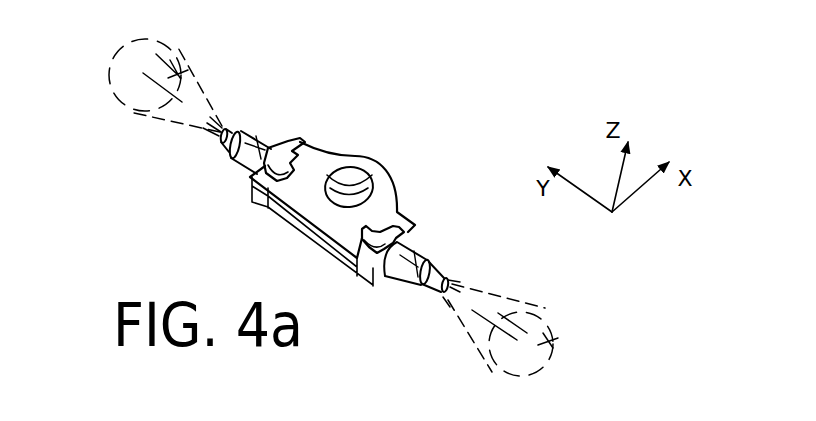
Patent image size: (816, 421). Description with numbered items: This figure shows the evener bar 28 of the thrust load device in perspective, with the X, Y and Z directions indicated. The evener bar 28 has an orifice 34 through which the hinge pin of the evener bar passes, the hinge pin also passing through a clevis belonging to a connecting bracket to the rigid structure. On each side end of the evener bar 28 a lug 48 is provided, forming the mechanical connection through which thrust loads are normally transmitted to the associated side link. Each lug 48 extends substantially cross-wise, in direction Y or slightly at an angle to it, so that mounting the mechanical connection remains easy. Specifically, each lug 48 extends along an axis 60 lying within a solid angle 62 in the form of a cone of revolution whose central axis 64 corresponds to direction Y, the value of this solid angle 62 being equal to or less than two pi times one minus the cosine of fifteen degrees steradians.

The evener bar 28 is at (399, 180).
The orifice 34 is at (353, 173).
The lug 48 is at (268, 148).
The axis 60 is at (198, 76).
The solid angle 62 is at (175, 127).
The central axis 64 is at (118, 80).